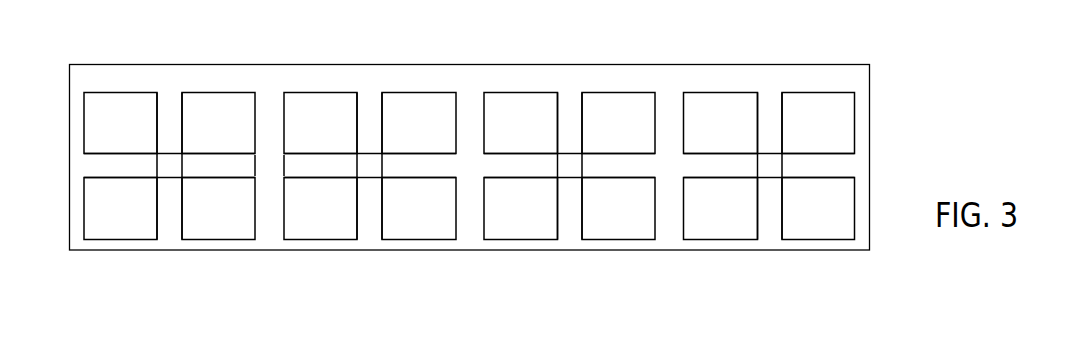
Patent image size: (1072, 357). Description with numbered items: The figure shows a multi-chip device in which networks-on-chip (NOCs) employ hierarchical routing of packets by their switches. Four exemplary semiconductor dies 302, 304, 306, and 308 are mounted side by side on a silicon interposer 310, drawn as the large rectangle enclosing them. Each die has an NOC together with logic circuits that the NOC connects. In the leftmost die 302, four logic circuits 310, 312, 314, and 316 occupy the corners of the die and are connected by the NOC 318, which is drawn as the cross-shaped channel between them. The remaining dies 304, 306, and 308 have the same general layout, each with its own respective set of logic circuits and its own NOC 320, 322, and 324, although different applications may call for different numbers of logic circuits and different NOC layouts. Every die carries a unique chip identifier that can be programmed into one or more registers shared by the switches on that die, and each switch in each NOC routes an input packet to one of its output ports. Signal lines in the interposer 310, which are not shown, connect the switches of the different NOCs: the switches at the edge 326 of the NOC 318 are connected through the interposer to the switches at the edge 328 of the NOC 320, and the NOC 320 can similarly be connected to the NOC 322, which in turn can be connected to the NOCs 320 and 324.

The semiconductor die 302 is at (200, 92).
The semiconductor die 304 is at (395, 92).
The semiconductor die 306 is at (595, 92).
The semiconductor die 308 is at (794, 92).
The silicon interposer 310 is at (182, 64).
The logic circuit 312 is at (230, 132).
The logic circuit 314 is at (230, 218).
The logic circuit 316 is at (132, 218).
The NOC 318 is at (182, 173).
The NOC 320 is at (378, 173).
The NOC 322 is at (578, 173).
The NOC 324 is at (778, 173).
The edge of NOC 318 326 is at (257, 165).
The edge of NOC 320 328 is at (282, 167).